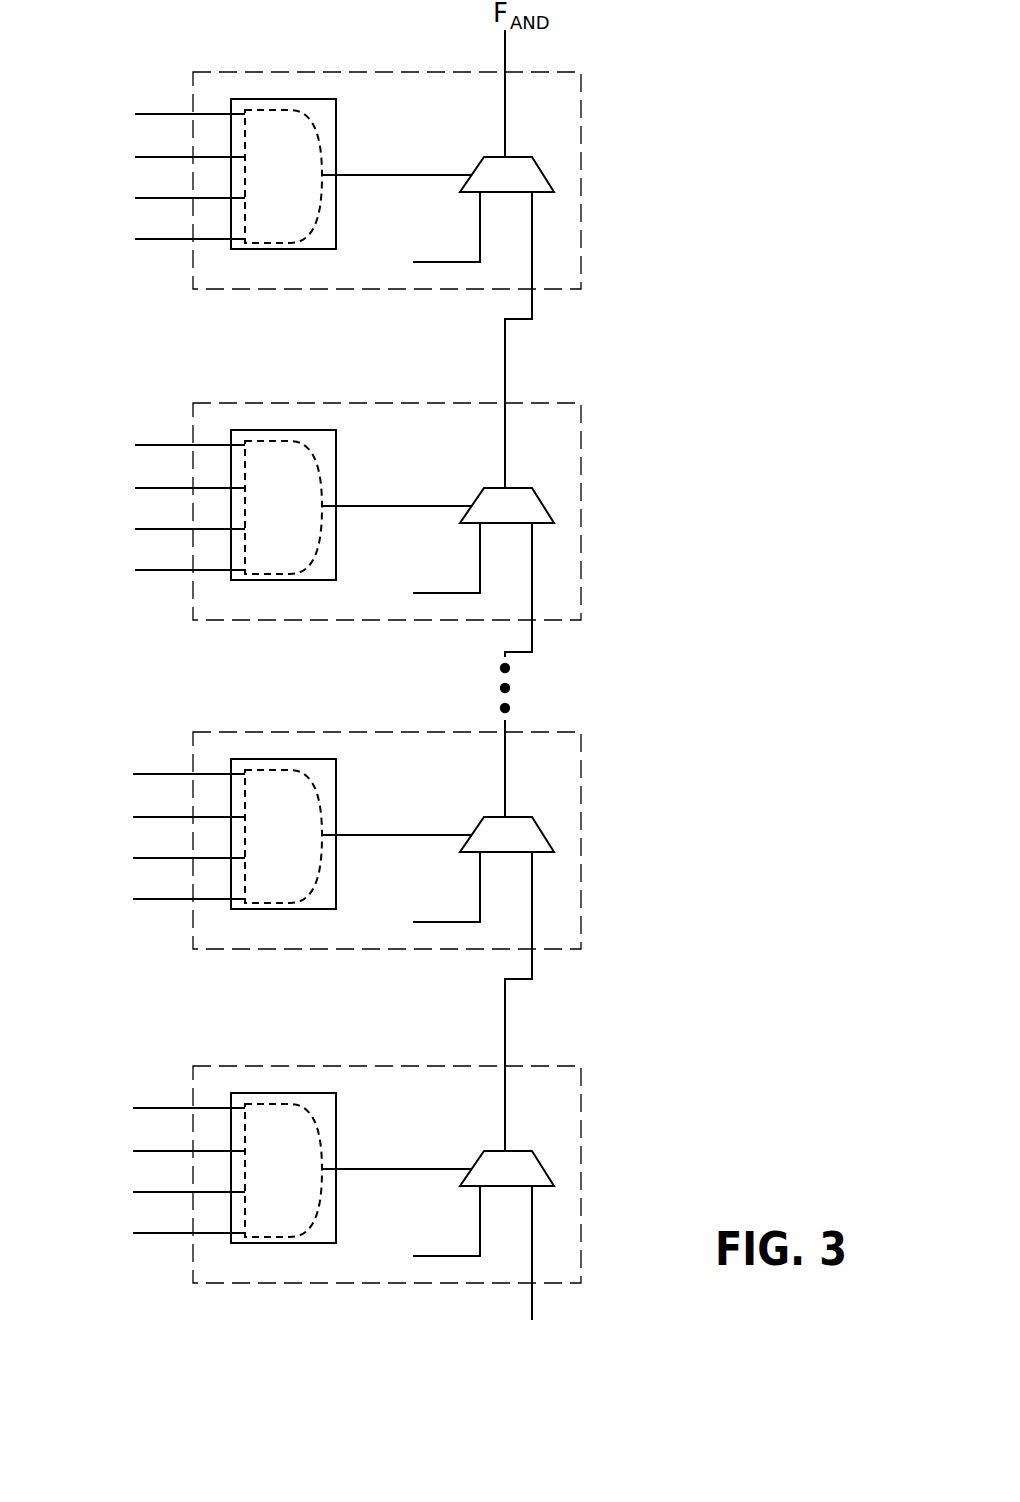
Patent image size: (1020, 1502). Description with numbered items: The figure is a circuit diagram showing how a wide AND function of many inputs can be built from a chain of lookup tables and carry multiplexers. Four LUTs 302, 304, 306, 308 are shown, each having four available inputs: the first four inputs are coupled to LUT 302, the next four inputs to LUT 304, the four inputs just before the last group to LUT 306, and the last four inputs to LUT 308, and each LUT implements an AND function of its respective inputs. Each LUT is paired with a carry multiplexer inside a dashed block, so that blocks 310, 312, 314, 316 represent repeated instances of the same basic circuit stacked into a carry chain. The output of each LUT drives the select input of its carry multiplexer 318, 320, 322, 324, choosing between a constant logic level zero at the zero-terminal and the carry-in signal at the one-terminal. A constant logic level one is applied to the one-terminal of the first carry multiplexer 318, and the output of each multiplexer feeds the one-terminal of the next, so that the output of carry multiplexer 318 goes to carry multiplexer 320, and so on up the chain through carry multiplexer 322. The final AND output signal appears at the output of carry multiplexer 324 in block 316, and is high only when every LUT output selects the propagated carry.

The LUT 302 is at (336, 1146).
The LUT 304 is at (336, 801).
The LUT 306 is at (337, 470).
The LUT 308 is at (337, 160).
The block 310 is at (581, 1207).
The block 312 is at (581, 872).
The block 314 is at (581, 543).
The block 316 is at (581, 212).
The carry multiplexer 318 is at (567, 1152).
The carry multiplexer 320 is at (567, 818).
The carry multiplexer 322 is at (567, 489).
The carry multiplexer 324 is at (567, 158).